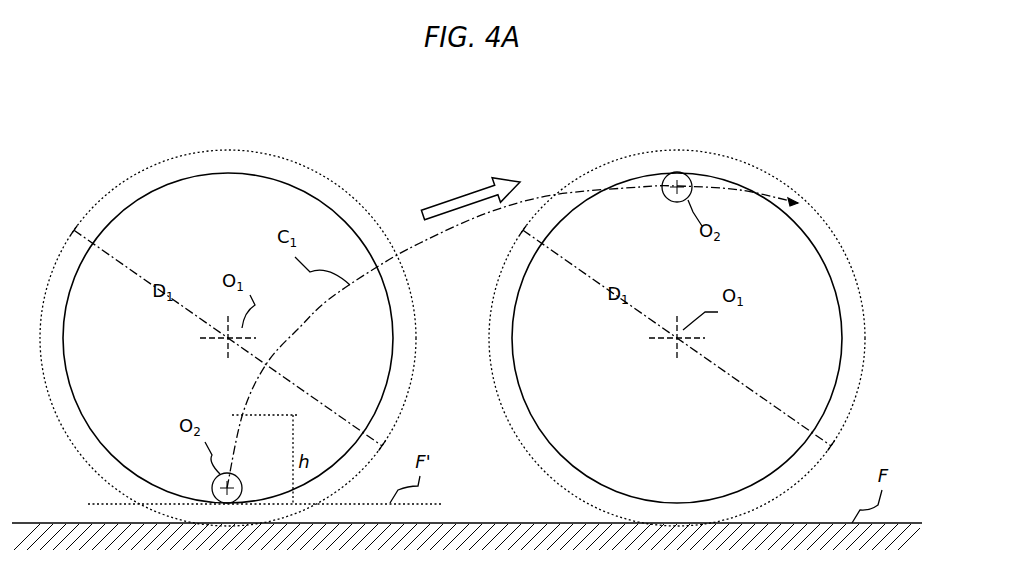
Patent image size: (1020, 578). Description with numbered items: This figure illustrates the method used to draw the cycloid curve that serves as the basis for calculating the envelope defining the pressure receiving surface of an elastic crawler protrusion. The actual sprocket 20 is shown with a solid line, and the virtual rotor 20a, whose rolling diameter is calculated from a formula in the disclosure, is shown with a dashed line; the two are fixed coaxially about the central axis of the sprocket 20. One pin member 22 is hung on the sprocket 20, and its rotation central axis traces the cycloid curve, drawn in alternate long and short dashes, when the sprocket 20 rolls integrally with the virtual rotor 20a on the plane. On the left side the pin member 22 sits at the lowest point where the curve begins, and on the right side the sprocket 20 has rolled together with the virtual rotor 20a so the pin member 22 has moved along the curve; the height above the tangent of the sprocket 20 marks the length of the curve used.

The sprocket 20 is at (187, 178).
The virtual rotor 20a is at (333, 183).
The pin member 22 is at (213, 485).